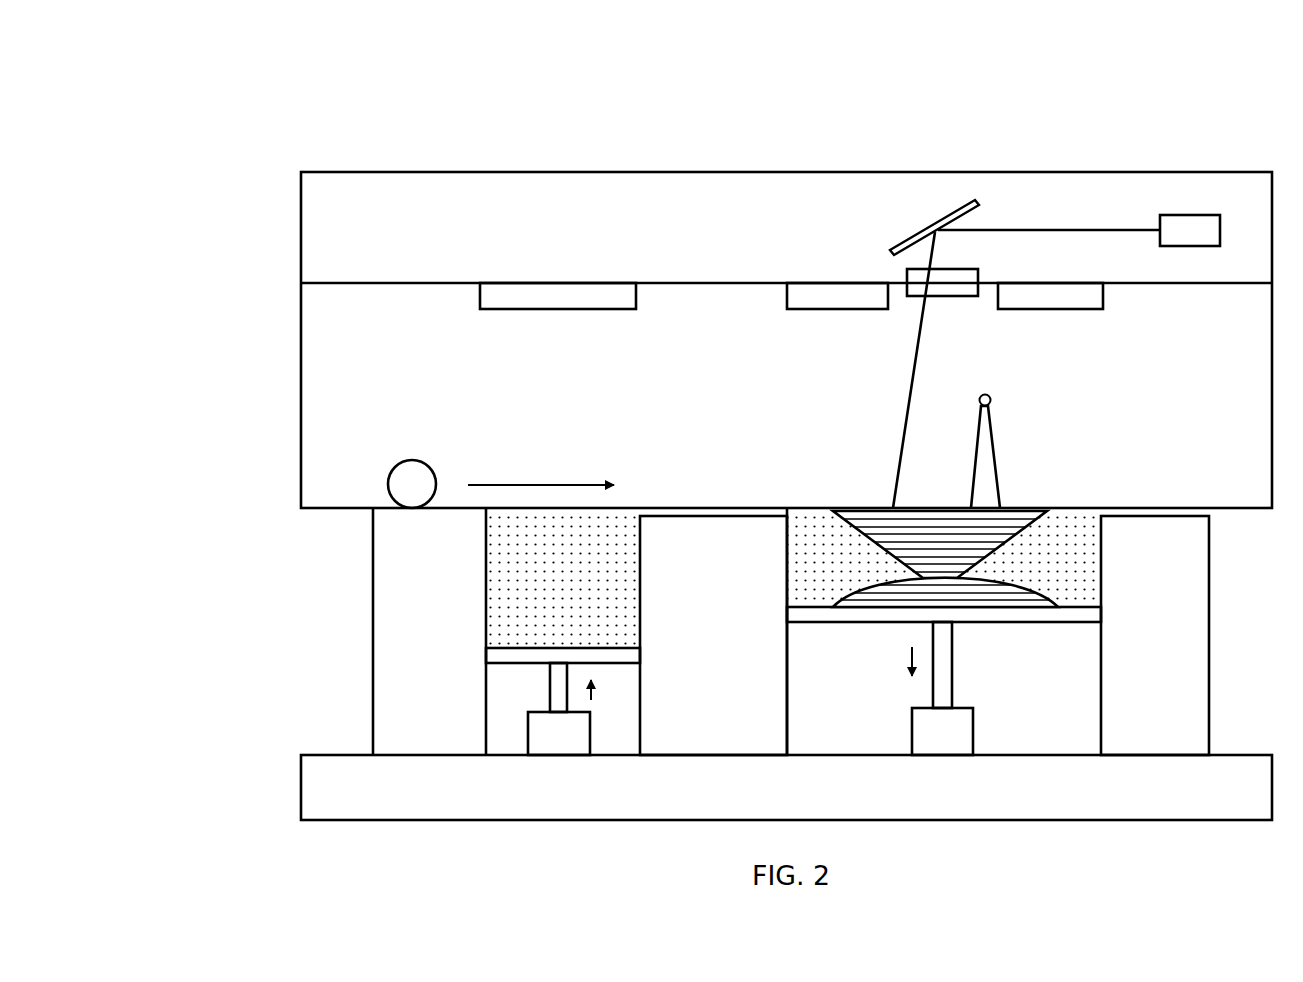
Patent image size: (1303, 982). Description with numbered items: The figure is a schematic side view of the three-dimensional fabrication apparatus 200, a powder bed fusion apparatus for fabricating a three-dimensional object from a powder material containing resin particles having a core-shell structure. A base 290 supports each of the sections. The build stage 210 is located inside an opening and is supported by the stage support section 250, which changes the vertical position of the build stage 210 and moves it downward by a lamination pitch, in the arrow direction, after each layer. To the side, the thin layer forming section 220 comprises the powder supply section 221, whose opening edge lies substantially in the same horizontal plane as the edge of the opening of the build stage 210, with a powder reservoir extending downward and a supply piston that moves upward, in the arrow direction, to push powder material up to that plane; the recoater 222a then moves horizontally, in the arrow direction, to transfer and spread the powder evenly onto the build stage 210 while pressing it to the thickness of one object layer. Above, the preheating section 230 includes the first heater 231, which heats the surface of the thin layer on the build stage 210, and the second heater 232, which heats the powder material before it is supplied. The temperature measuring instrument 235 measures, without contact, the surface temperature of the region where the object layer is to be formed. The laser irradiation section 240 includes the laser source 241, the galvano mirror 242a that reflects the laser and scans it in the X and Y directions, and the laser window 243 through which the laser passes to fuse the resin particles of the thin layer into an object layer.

The three-dimensional fabrication apparatus 200 is at (331, 77).
The build stage 210 is at (1013, 630).
The thin layer forming section 220 is at (417, 607).
The powder supply section 221 is at (506, 696).
The recoater 222a is at (388, 492).
The preheating section 230 is at (791, 361).
The first heater 231 is at (983, 302).
The second heater 232 is at (620, 320).
The temperature measuring instrument 235 is at (994, 406).
The laser irradiation section 240 is at (1050, 271).
The laser source 241 is at (1186, 204).
The galvano mirror 242a is at (957, 198).
The laser window 243 is at (880, 108).
The stage support section 250 is at (902, 715).
The base 290 is at (297, 748).